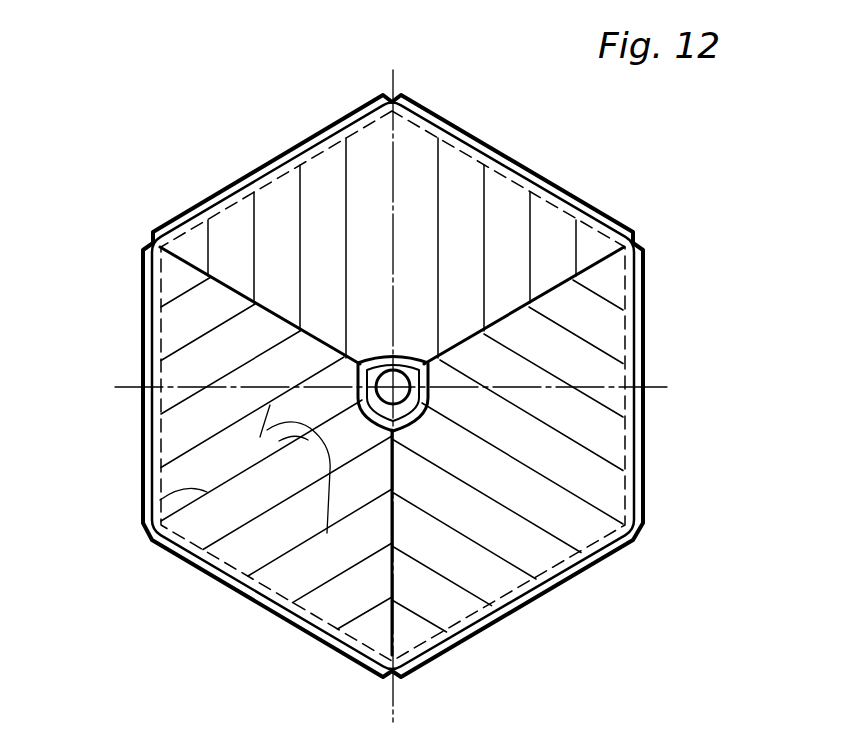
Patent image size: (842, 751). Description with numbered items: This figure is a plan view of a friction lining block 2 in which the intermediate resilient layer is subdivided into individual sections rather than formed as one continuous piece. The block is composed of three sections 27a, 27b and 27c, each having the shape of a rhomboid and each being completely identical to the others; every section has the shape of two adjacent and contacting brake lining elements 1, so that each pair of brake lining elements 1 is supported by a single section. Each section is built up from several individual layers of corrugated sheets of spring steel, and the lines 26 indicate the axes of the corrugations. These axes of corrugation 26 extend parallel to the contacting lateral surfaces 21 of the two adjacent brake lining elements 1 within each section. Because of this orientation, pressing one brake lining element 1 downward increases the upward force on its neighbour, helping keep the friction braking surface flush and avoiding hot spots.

The brake lining element 1 is at (316, 172).
The friction lining block 2 is at (545, 165).
The contacting lateral surfaces 21 is at (394, 102).
The axis of corrugation 26 is at (440, 259).
The section 27a is at (277, 208).
The section 27b is at (197, 363).
The section 27c is at (618, 343).